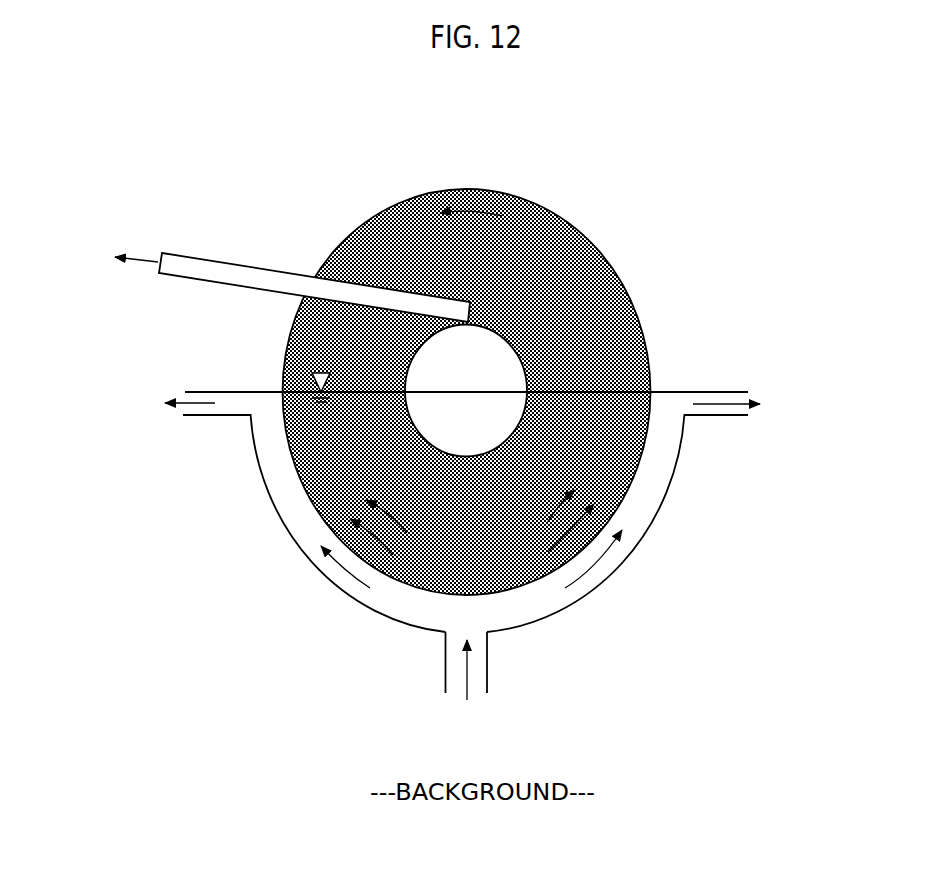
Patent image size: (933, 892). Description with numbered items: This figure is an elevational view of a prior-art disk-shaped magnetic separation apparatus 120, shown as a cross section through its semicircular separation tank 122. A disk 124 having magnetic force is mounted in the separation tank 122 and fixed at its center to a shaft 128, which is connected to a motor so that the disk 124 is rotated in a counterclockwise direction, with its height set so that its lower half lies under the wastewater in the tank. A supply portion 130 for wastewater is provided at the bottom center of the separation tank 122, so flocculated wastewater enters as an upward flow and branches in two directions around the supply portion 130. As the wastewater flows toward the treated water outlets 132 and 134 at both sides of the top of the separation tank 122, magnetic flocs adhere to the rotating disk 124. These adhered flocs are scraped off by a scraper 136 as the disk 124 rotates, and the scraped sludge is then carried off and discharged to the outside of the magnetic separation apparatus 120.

The magnetic separation apparatus 120 is at (608, 182).
The separation tank 122 is at (637, 549).
The disk 124 is at (463, 196).
The shaft 128 is at (434, 433).
The supply portion 130 is at (446, 661).
The treated water outlet 132 is at (714, 418).
The treated water outlet 134 is at (216, 417).
The scraper 136 is at (242, 277).